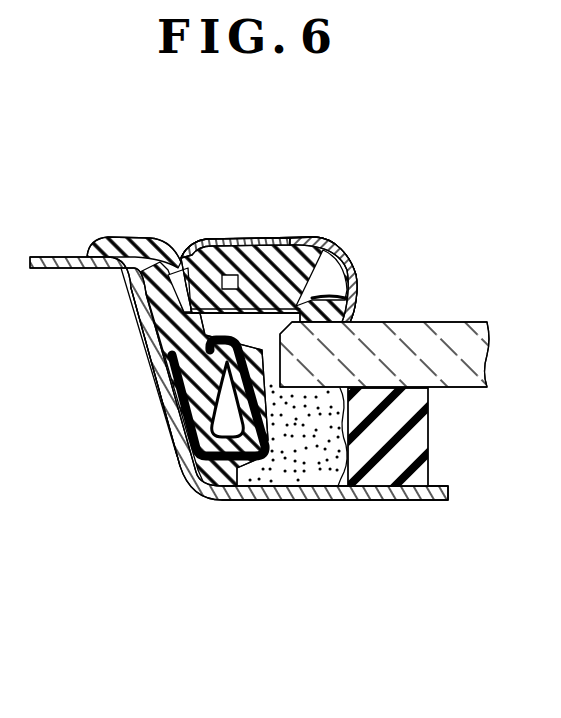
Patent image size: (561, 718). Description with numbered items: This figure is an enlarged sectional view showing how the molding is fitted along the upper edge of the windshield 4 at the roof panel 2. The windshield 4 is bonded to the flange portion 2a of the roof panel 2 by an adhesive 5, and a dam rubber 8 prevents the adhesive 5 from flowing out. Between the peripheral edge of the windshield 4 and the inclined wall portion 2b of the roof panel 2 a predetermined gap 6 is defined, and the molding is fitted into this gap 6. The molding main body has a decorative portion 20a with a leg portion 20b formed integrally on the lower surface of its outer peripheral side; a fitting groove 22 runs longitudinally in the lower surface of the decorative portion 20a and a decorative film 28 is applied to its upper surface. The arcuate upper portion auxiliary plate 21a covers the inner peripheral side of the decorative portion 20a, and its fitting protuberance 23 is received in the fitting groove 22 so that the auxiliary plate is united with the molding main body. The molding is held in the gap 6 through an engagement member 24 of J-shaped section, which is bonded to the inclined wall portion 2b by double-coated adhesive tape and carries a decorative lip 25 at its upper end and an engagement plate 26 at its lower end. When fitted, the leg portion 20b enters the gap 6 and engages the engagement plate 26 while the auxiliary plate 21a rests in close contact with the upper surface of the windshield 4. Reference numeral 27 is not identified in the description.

The roof panel 2 is at (50, 256).
The flange portion 2a is at (386, 500).
The inclined wall portion 2b is at (145, 336).
The windshield 4 is at (468, 322).
The adhesive 5 is at (299, 450).
The gap 6 is at (270, 350).
The dam rubber 8 is at (410, 447).
The decorative portion 20a is at (230, 238).
The leg portion 20b is at (160, 368).
The upper portion auxiliary plate 21a is at (358, 288).
The fitting groove 22 is at (193, 255).
The fitting protuberance 23 is at (300, 240).
The engagement member 24 is at (205, 336).
The decorative lip 25 is at (133, 238).
The engagement plate 26 is at (216, 353).
The outer skin lip 27 is at (138, 304).
The decorative film 28 is at (265, 238).